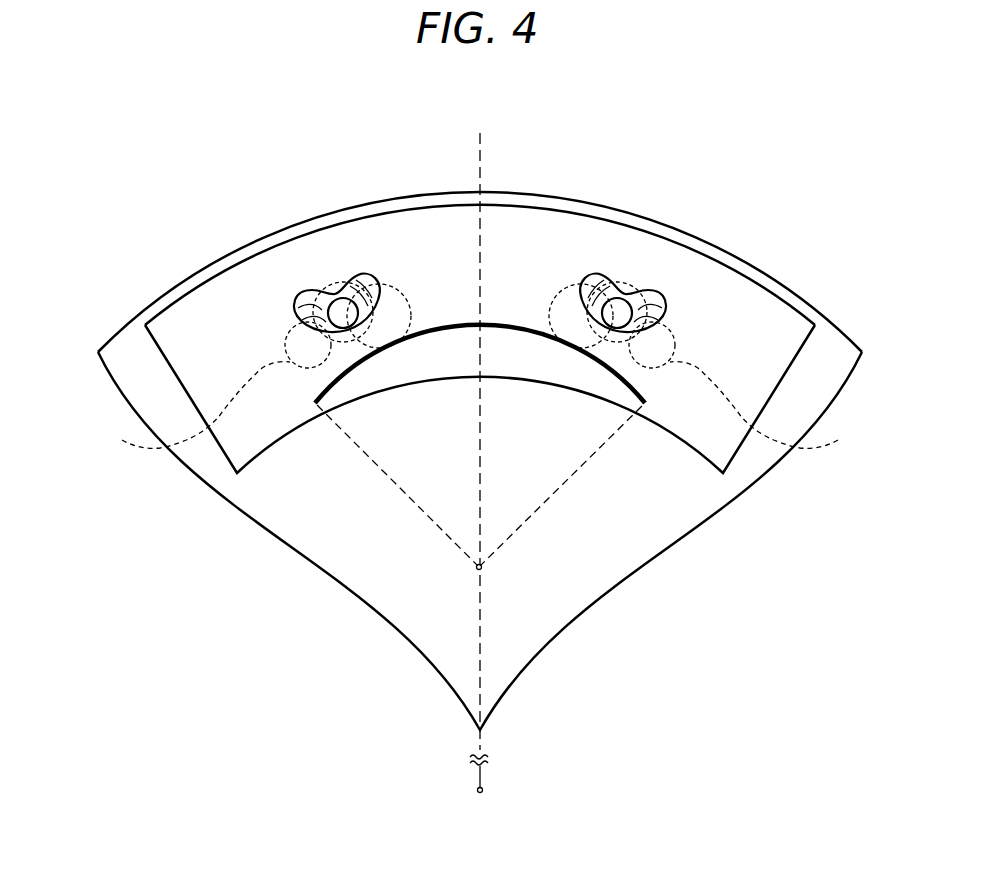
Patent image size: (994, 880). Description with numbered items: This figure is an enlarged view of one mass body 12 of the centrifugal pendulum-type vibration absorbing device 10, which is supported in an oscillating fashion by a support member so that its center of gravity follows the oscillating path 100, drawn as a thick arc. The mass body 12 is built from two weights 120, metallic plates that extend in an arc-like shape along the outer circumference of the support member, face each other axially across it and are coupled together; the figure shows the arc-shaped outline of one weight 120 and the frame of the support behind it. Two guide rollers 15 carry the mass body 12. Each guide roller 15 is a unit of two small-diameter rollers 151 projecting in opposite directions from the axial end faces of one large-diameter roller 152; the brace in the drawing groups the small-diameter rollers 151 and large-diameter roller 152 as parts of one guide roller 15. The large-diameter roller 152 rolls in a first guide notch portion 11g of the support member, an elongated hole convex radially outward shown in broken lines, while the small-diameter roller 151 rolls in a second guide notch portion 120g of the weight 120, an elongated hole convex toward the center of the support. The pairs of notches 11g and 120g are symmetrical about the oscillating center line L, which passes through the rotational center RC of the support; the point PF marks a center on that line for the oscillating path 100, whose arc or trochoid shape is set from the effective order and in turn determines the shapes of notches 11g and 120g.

The centrifugal pendulum-type vibration absorbing device 10 is at (426, 192).
The mass body 12 is at (735, 460).
The weight 120 is at (512, 223).
The second guide notch portion 120g is at (337, 285).
The guide roller 15 is at (218, 160).
The small-diameter roller 151 is at (310, 292).
The large-diameter roller 152 is at (304, 300).
The first guide notch portion 11g is at (478, 405).
The oscillating path 100 is at (490, 322).
The optical axis L is at (481, 145).
The focal point PF is at (478, 569).
The rotation center RC is at (483, 790).